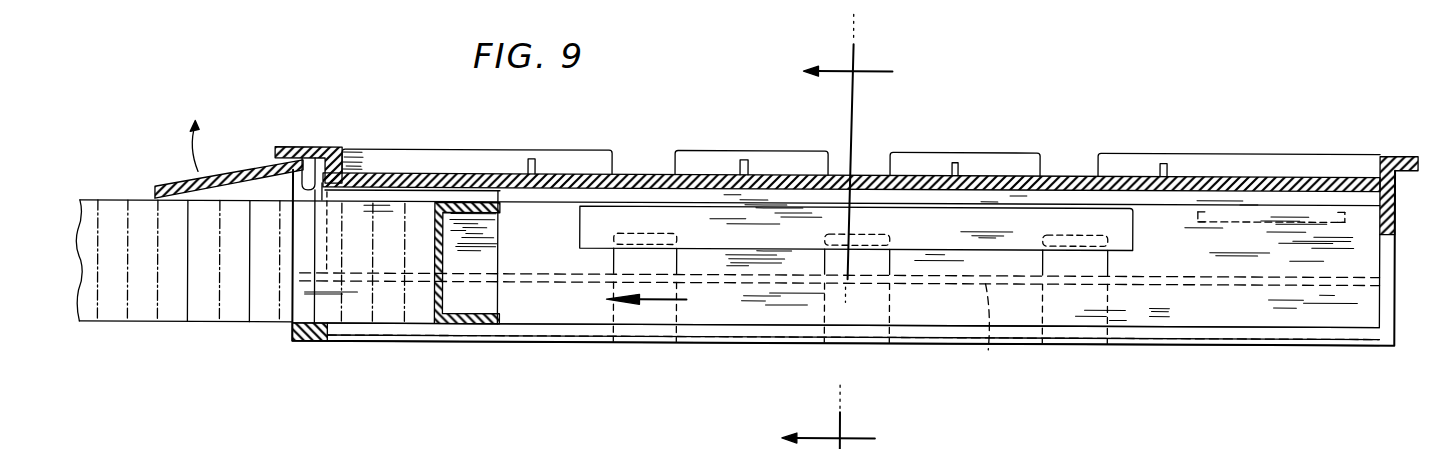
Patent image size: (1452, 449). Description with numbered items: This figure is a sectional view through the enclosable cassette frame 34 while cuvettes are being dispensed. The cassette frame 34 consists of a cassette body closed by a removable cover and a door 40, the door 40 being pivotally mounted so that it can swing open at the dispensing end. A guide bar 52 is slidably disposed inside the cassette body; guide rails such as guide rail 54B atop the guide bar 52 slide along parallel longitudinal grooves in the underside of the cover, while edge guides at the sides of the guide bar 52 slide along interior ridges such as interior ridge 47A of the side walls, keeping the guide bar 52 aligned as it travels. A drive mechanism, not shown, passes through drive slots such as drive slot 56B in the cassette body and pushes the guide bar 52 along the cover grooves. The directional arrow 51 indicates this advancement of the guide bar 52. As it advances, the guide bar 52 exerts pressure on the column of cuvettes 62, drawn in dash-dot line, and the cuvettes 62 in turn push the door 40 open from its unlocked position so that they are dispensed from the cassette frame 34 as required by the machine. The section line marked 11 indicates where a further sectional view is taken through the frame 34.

The enclosable cassette frame 34 is at (1153, 124).
The door 40 is at (230, 172).
The cuvettes 62 is at (197, 247).
The guide rail 54B is at (437, 195).
The drive slot 56B is at (722, 342).
The guide bar 52 is at (457, 323).
The directional arrow 51 is at (687, 300).
The interior ridge 47A is at (990, 347).
The section line 11- 11 is at (892, 64).